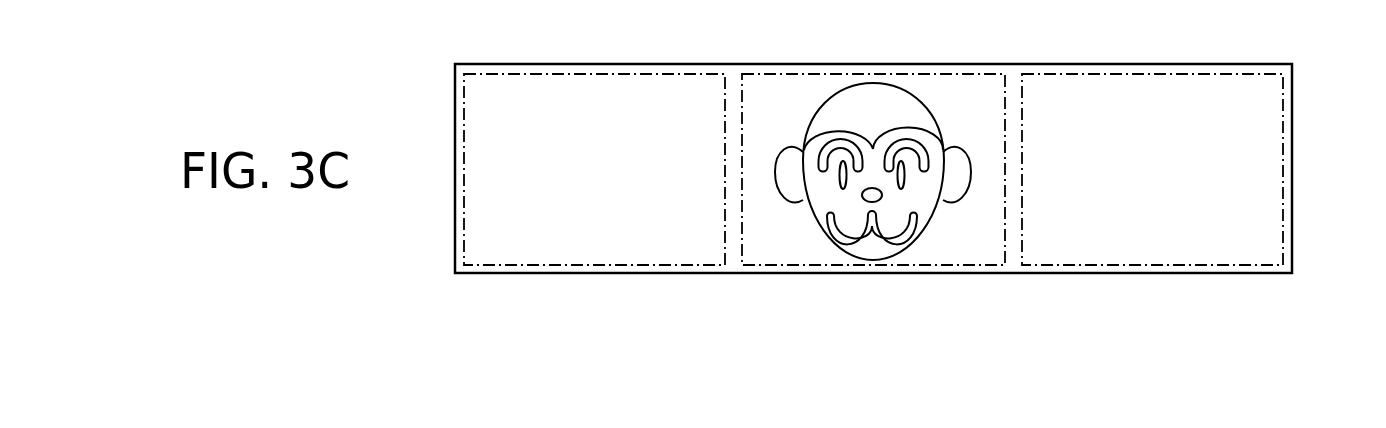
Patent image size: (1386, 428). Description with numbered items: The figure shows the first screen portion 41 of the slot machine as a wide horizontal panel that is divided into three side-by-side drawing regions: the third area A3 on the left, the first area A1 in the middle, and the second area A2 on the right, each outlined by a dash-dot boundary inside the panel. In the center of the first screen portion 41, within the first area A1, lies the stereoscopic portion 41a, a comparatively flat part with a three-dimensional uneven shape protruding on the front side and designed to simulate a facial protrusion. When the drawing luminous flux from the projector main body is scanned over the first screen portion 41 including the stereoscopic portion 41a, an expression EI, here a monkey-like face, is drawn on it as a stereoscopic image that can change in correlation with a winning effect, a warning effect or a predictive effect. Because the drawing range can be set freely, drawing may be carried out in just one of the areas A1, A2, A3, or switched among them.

The first screen portion 41 is at (1292, 172).
The stereoscopic portion 41a is at (876, 174).
The expression EI is at (847, 105).
The first area A1 is at (785, 265).
The second area A2 is at (1136, 265).
The third area A3 is at (605, 265).